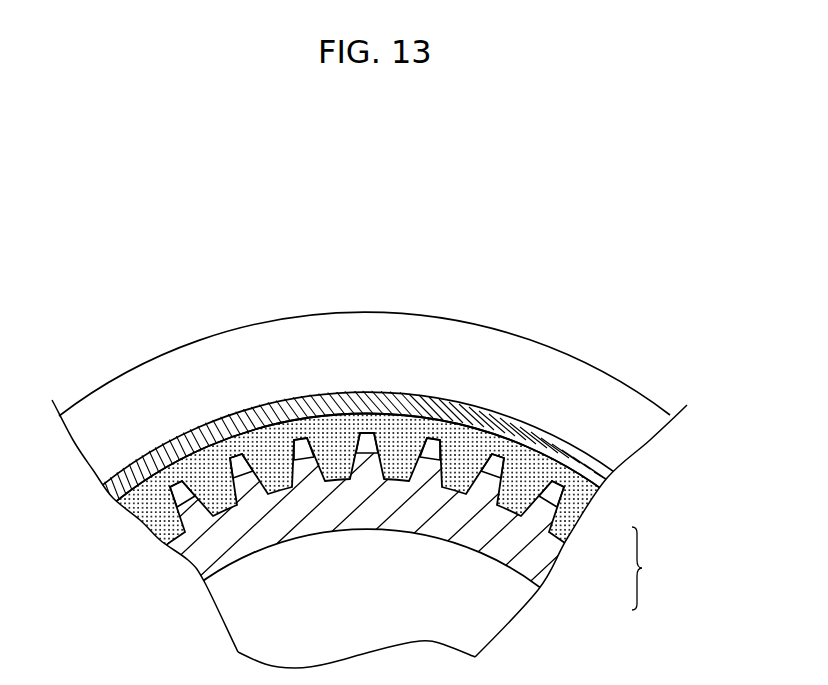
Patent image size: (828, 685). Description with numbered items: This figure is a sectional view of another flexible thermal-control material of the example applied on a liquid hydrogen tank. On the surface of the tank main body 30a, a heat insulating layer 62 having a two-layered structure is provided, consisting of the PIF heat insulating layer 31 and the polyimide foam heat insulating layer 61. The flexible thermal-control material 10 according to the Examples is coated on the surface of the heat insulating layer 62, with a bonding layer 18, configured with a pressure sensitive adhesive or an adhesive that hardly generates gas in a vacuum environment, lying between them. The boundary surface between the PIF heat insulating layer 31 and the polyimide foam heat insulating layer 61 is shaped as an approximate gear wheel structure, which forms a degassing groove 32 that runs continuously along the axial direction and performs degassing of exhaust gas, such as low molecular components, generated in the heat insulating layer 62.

The flexible thermal-control material 10 is at (393, 311).
The bonding layer 18 is at (606, 480).
The degassing groove 32 is at (502, 467).
The polyimide foam heat insulating layer 61 is at (572, 520).
The PIF heat insulating layer 31 is at (550, 567).
The heat insulating layer 62 is at (653, 568).
The tank main body 30a is at (490, 617).